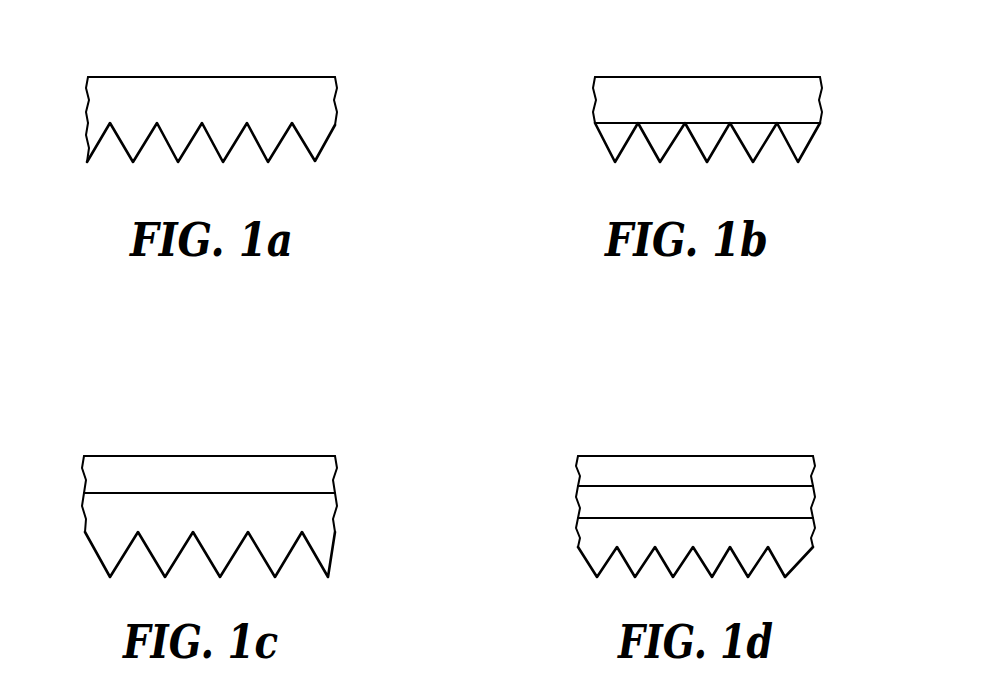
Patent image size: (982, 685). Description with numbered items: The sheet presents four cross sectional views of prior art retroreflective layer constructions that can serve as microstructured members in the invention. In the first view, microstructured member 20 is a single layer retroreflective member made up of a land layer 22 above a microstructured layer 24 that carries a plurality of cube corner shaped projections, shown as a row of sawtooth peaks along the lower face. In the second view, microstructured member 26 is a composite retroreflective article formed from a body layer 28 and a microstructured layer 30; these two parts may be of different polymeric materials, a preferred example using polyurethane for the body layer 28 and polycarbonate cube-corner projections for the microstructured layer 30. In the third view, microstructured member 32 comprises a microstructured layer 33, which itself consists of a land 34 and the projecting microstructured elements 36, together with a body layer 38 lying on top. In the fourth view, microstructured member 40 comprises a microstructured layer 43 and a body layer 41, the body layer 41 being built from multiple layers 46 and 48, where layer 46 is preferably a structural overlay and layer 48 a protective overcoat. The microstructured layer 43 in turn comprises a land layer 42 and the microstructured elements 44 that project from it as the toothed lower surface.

In FIG. 1a, the microstructured member 20 is at (249, 88).
In FIG. 1a, the land layer 22 is at (360, 79).
In FIG. 1a, the microstructured layer 24 is at (360, 125).
In FIG. 1b, the microstructured member 26 is at (721, 114).
In FIG. 1b, the body layer 28 is at (818, 80).
In FIG. 1b, the microstructured layer 30 is at (697, 152).
In FIG. 1c, the microstructured member 32 is at (217, 506).
In FIG. 1c, the microstructured layer 33 is at (217, 557).
In FIG. 1c, the land 34 is at (352, 495).
In FIG. 1c, the microstructured elements 36 is at (210, 576).
In FIG. 1c, the body layer 38 is at (103, 466).
In FIG. 1d, the microstructured member 40 is at (681, 500).
In FIG. 1d, the body layer 41 is at (681, 482).
In FIG. 1d, the land layer 42 is at (818, 519).
In FIG. 1d, the microstructured layer 43 is at (685, 565).
In FIG. 1d, the microstructured elements 44 is at (786, 565).
In FIG. 1d, the layer 46 is at (805, 503).
In FIG. 1d, the layer 48 is at (808, 478).